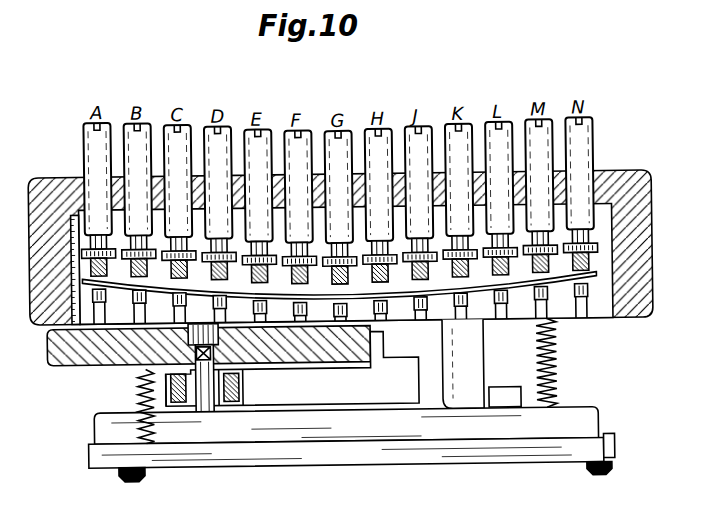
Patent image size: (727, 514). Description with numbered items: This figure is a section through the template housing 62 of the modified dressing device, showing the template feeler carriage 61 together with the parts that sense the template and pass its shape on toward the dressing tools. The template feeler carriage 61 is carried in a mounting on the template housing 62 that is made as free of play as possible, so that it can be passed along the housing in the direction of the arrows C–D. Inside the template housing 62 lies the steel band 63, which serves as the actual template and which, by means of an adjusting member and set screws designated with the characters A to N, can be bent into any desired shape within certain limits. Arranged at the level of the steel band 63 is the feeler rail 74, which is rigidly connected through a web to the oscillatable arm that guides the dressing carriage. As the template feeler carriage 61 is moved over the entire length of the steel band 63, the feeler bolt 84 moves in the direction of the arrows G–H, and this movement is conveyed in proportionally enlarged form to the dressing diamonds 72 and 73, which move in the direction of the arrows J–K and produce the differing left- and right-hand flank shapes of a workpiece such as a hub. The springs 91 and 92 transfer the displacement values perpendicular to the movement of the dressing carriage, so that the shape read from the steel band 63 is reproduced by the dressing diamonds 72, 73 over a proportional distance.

The template feeler carriage 61 is at (50, 351).
The template housing 62 is at (42, 182).
The steel band 63 is at (83, 216).
The dressing diamond 72 is at (120, 477).
The dressing diamond 73 is at (587, 468).
The feeler rail 74 is at (568, 445).
The feeler bolt 84 is at (213, 443).
The spring 91 is at (133, 389).
The spring 92 is at (552, 358).